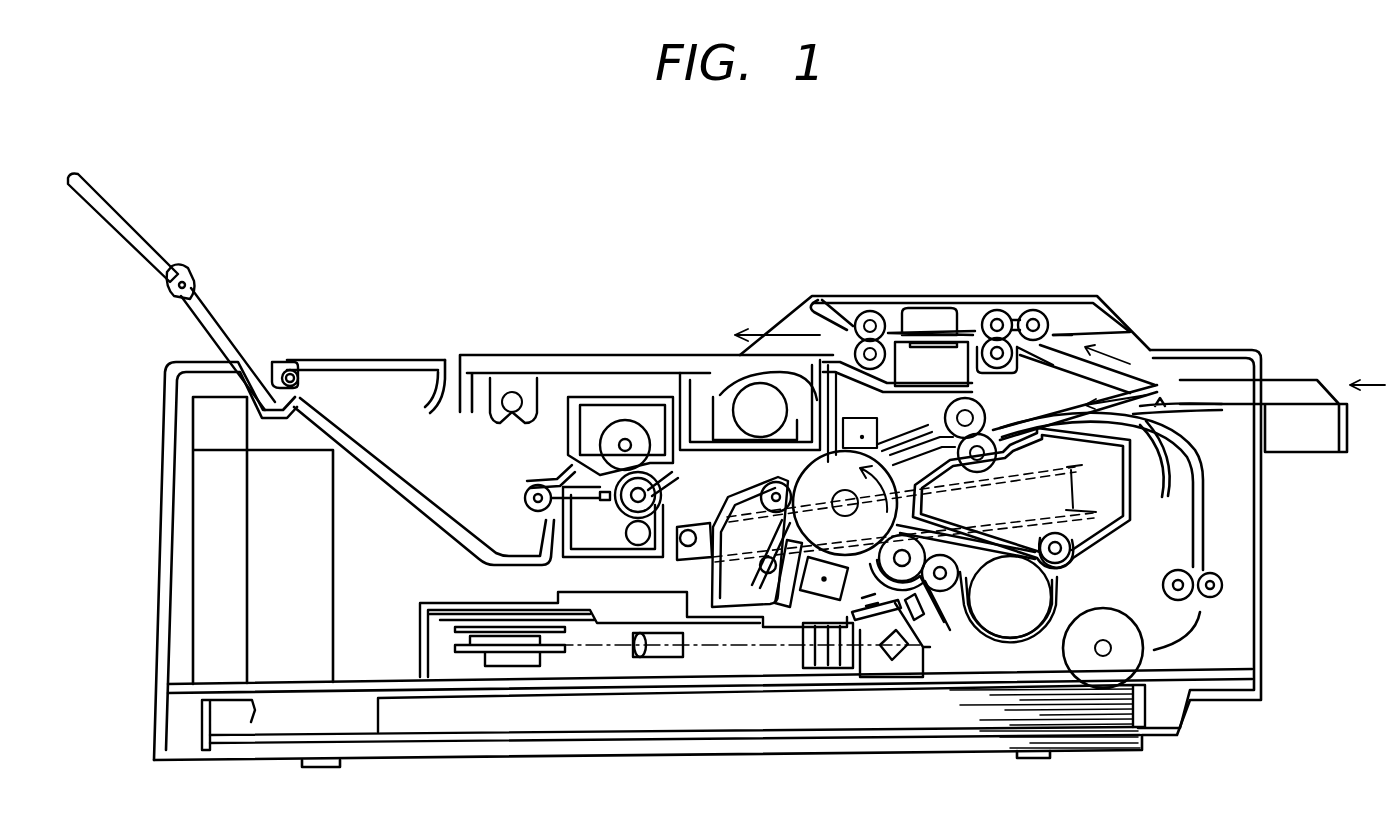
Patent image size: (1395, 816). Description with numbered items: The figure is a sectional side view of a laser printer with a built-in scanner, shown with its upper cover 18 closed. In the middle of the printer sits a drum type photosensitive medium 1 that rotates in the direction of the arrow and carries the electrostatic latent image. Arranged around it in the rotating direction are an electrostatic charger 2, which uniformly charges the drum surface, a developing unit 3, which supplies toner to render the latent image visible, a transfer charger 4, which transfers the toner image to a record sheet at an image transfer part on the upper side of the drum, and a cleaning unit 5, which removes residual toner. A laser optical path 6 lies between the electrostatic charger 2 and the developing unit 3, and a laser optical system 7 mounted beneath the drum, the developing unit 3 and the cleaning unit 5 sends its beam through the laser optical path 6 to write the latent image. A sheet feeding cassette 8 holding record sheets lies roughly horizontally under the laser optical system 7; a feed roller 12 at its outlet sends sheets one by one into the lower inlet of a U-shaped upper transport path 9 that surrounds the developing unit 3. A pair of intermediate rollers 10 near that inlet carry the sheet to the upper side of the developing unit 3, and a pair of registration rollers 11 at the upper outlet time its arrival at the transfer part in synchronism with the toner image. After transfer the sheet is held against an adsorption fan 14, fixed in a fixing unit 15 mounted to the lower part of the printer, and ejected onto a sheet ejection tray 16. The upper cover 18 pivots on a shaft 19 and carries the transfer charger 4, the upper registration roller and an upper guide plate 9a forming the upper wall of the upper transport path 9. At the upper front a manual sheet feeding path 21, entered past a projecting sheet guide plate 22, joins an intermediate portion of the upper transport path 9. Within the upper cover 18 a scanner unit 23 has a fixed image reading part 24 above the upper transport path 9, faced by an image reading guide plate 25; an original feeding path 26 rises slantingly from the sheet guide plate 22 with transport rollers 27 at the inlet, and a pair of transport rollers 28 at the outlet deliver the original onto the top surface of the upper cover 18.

The drum type photosensitive medium 1 is at (830, 496).
The electrostatic charger 2 is at (810, 613).
The developing unit 3 is at (990, 672).
The transfer charger 4 is at (858, 424).
The cleaning unit 5 is at (710, 568).
The laser optical path 6 is at (832, 603).
The laser optical system 7 is at (908, 664).
The sheet feeding cassette 8 is at (937, 722).
The upper transport path 9 is at (1090, 424).
The upper guide plate 9a is at (1000, 425).
The intermediate rollers 10 is at (1222, 590).
The registration rollers 11 is at (975, 415).
The feed roller 12 is at (1104, 616).
The adsorption fan 14 is at (742, 385).
The fixing unit 15 is at (585, 422).
The sheet ejection tray 16 is at (350, 448).
The upper cover 18 is at (607, 355).
The shaft 19 is at (507, 422).
The manual sheet feeding path 21 is at (1182, 415).
The sheet guide plate 22 is at (1300, 380).
The scanner unit 23 is at (982, 284).
The image reading part 24 is at (920, 378).
The image reading guide plate 25 is at (928, 308).
The original feeding path 26 is at (1096, 357).
The transport rollers 27 is at (1002, 312).
The transport rollers 28 is at (869, 308).